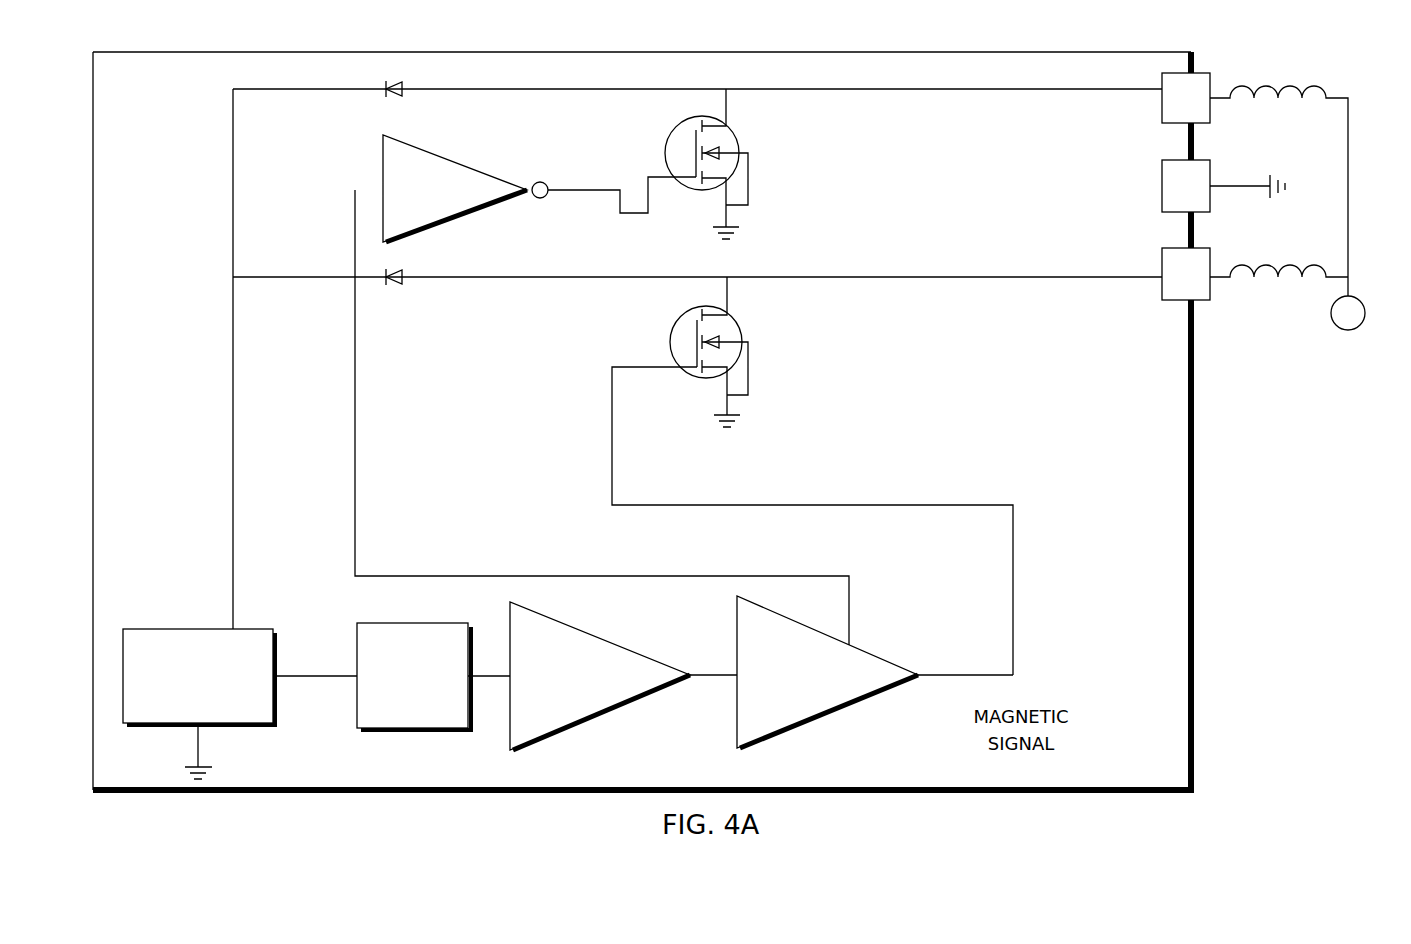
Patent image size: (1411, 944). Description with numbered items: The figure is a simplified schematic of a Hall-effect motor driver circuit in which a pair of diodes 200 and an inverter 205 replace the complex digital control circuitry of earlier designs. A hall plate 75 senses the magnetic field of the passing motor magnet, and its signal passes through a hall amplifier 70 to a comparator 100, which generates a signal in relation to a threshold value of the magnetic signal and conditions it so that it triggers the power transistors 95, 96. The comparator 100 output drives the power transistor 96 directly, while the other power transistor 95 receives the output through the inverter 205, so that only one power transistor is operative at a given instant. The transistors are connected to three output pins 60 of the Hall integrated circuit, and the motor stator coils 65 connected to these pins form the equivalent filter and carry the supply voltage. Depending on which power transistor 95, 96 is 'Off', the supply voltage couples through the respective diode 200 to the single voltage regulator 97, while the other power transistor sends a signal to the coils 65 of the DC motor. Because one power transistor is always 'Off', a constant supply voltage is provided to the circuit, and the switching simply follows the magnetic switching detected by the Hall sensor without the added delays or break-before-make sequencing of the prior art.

The diodes 200 is at (398, 83).
The inverter 205 is at (472, 165).
The power transistor 95 is at (738, 139).
The power transistor 96 is at (743, 334).
The output pins 60 is at (1203, 73).
The motor stator coils 65 is at (1317, 82).
The voltage regulator 97 is at (145, 629).
The hall plate 75 is at (410, 728).
The hall amplifier 70 is at (562, 730).
The comparator 100 is at (852, 703).